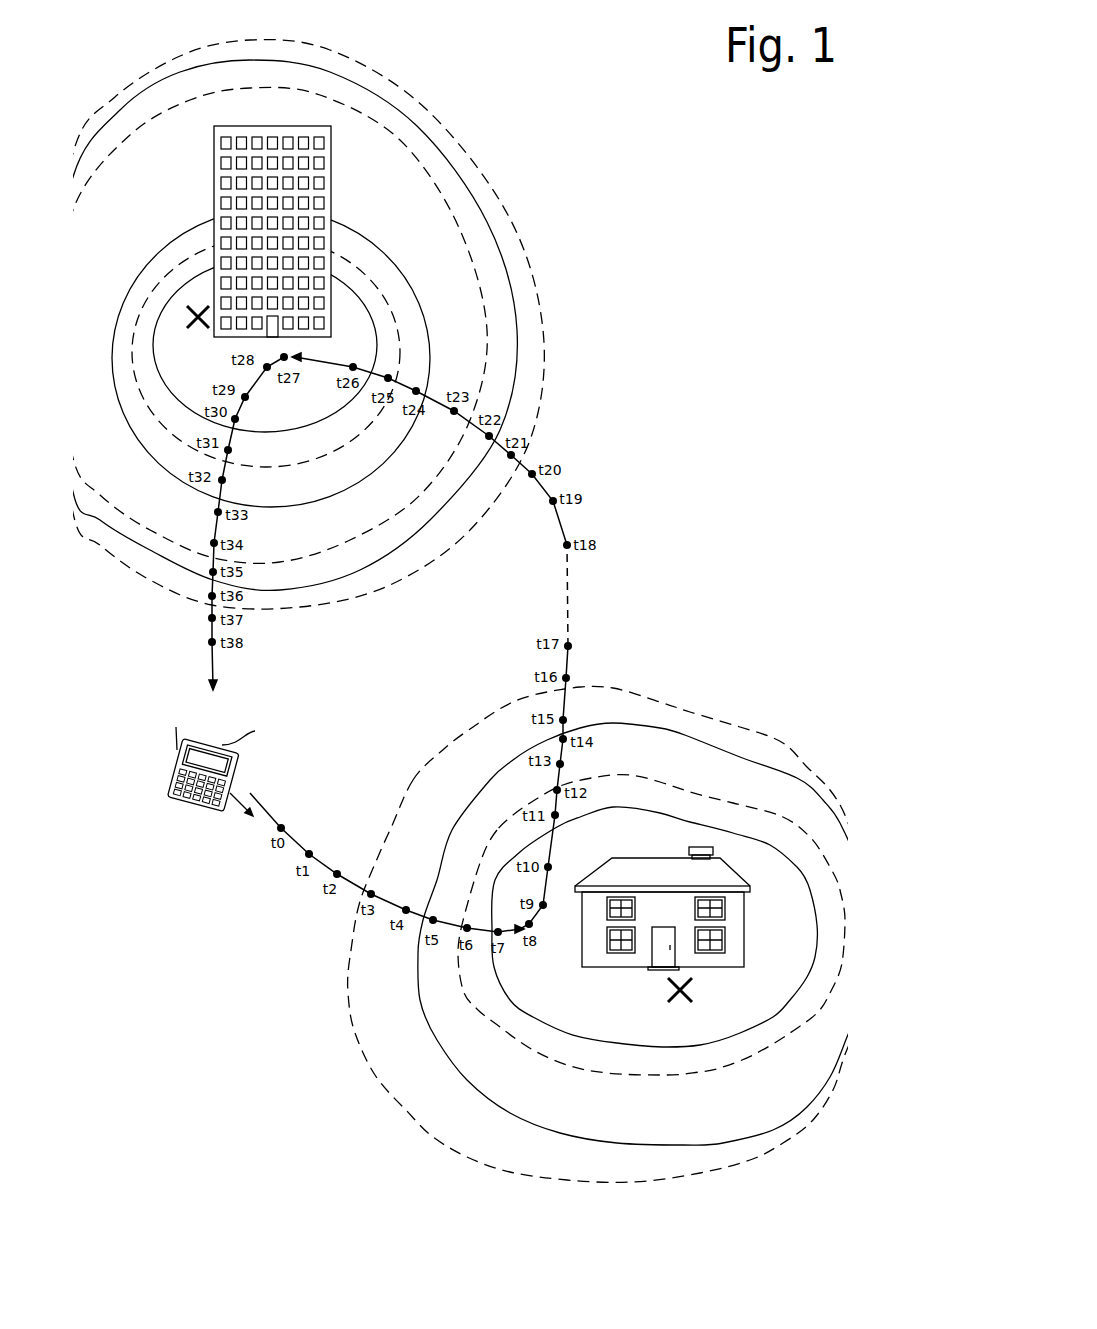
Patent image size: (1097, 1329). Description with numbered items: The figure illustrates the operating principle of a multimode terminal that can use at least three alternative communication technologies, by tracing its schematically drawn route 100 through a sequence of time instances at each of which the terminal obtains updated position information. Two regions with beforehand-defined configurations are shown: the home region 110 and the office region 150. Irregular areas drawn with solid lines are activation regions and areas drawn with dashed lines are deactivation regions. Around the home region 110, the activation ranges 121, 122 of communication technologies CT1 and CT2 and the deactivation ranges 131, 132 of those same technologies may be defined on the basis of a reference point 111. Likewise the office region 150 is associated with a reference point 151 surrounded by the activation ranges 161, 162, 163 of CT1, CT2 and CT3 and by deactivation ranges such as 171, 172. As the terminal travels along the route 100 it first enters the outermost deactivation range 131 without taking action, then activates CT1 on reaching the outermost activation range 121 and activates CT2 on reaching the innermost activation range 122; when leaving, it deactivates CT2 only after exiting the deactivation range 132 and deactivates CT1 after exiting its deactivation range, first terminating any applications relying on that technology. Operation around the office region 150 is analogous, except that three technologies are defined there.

The route of a multimode terminal 100 is at (272, 784).
The home region 110 is at (763, 700).
The reference point 111 is at (673, 1000).
The activation range of communication technology CT1 121 is at (463, 1078).
The activation range of communication technology CT2 122 is at (580, 1040).
The deactivation range of communication technology CT1 131 is at (372, 1070).
The deactivation range of communication technology CT2 132 is at (580, 1067).
The office region 150 is at (485, 98).
The reference point 151 is at (192, 333).
The activation range of communication technology CT1 161 is at (300, 582).
The activation range of communication technology CT2 162 is at (347, 493).
The activation range of communication technology CT3 163 is at (347, 422).
The deactivation range of communication technology CT1 171 is at (300, 605).
The deactivation range of communication technology CT2 172 is at (347, 457).